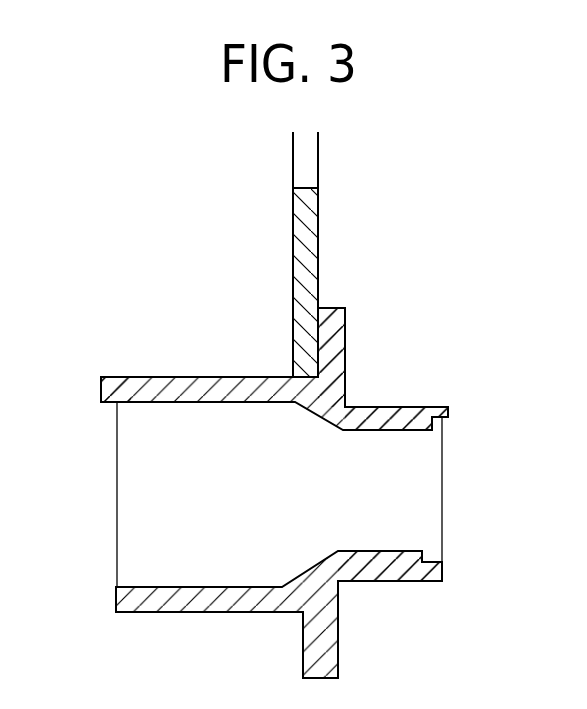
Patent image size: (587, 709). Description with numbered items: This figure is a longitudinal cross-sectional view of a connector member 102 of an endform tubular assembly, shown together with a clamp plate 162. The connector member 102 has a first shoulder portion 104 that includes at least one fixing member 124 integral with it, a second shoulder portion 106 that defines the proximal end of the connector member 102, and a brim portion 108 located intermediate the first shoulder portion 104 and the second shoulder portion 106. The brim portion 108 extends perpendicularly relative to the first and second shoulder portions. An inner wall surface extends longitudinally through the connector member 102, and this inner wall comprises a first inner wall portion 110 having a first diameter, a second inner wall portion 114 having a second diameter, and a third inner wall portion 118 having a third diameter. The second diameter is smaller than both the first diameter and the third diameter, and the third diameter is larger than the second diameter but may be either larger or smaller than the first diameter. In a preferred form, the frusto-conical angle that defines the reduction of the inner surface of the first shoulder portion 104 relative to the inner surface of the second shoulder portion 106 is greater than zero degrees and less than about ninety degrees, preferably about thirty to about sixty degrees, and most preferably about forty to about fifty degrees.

The connector member 102 is at (168, 222).
The first shoulder portion 104 is at (200, 378).
The second shoulder portion 106 is at (387, 410).
The brim portion 108 is at (340, 330).
The first inner wall portion 110 is at (190, 587).
The second inner wall portion 114 is at (365, 551).
The third inner wall portion 118 is at (442, 565).
The fixing member 124 is at (100, 386).
The clamp plate 162 is at (316, 236).